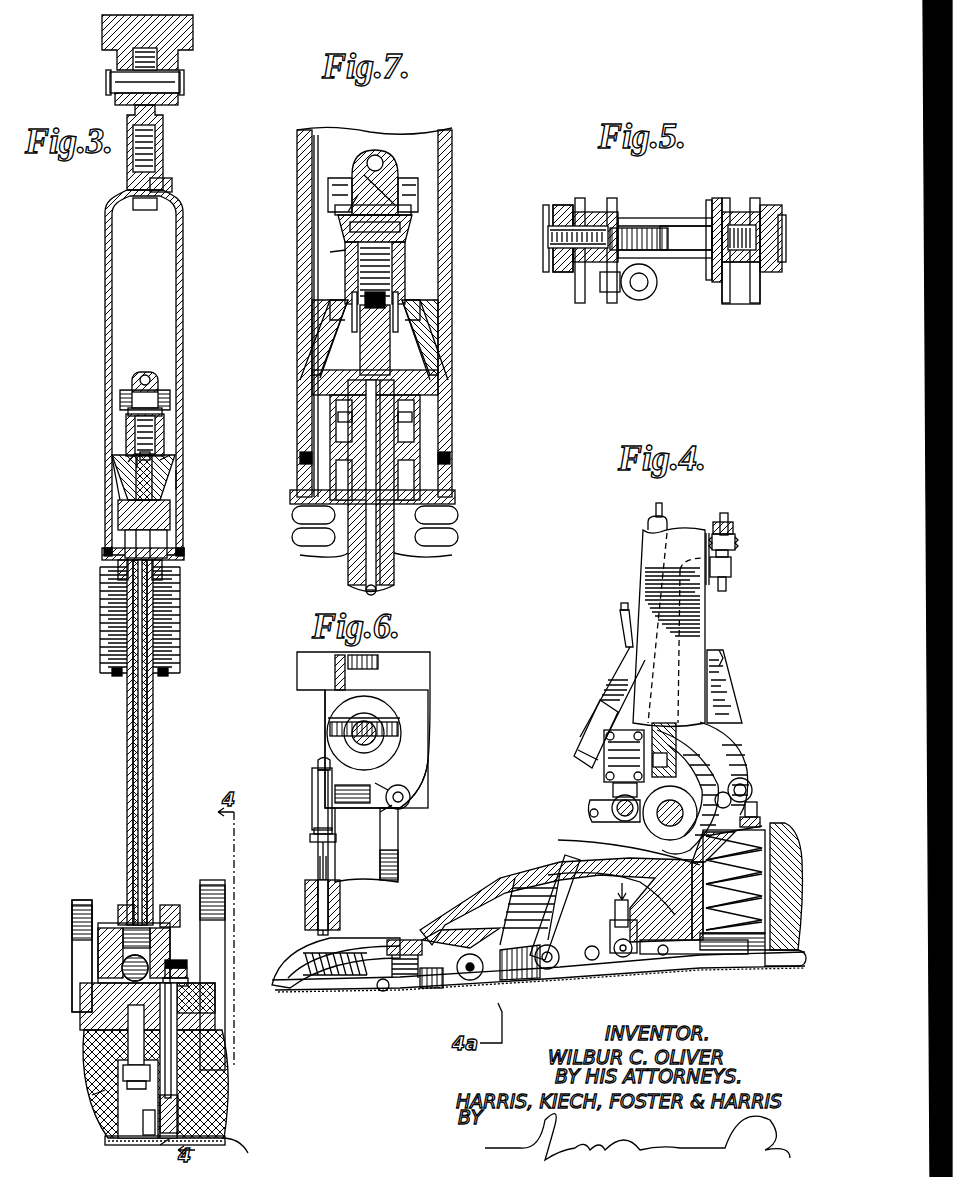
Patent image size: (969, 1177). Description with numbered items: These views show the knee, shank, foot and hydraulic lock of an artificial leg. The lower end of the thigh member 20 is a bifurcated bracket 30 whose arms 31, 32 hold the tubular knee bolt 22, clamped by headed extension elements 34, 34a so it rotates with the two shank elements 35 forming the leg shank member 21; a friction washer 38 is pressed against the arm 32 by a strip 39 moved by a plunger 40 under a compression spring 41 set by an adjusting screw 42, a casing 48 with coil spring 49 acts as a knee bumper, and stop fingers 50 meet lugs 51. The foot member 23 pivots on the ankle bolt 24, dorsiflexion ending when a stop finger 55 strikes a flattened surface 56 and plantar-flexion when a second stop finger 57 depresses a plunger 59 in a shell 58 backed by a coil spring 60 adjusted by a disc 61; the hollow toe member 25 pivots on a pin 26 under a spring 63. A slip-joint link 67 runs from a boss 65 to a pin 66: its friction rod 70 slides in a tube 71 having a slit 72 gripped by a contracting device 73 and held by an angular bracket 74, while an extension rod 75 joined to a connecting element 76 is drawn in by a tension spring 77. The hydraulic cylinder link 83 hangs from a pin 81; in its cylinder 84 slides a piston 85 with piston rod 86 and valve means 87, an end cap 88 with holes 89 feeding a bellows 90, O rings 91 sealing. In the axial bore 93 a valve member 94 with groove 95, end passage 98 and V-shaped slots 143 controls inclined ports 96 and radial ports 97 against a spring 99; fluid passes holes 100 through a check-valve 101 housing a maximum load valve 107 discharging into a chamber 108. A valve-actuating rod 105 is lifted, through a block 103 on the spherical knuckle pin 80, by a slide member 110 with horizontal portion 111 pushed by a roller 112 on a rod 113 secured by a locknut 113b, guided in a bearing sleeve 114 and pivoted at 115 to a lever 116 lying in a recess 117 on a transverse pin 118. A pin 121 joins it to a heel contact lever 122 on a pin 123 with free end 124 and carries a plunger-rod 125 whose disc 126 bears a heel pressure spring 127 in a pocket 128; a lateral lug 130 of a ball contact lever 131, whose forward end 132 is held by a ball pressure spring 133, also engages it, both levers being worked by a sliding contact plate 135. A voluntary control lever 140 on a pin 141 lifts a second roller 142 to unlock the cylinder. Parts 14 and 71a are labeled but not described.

In FIG. 4, the lever 14 is at (620, 614).
In FIG. 6, the thigh member 20 is at (430, 665).
In FIG. 3, the leg shank member 21 is at (72, 903).
In FIG. 6, the leg shank member 21 is at (398, 858).
In FIG. 5, the leg shank member 21 is at (560, 272).
In FIG. 4, the leg shank member 21 is at (643, 552).
In FIG. 6, the knee bolt 22 is at (340, 716).
In FIG. 5, the knee bolt 22 is at (690, 258).
In FIG. 3, the foot member 23 is at (84, 1060).
In FIG. 4, the foot member 23 is at (520, 882).
In FIG. 4, the ankle bolt 24 is at (672, 840).
In FIG. 4, the toe member 25 is at (318, 995).
In FIG. 4, the pin 26 is at (383, 991).
In FIG. 3, the bifurcated bracket 30 is at (193, 42).
In FIG. 6, the bifurcated bracket 30 is at (325, 700).
In FIG. 5, the bifurcated bracket 30 is at (760, 288).
In FIG. 5, the depending arm 31 is at (598, 212).
In FIG. 6, the depending arm 32 is at (412, 768).
In FIG. 5, the depending arm 32 is at (755, 198).
In FIG. 5, the extension element 34 is at (543, 228).
In FIG. 5, the extension element 34a is at (786, 238).
In FIG. 3, the shank element 35 is at (82, 900).
In FIG. 6, the shank element 35 is at (392, 880).
In FIG. 5, the shank element 35 is at (560, 205).
In FIG. 4, the shank element 35 is at (700, 640).
In FIG. 6, the friction washer 38 is at (378, 733).
In FIG. 5, the friction washer 38 is at (717, 198).
In FIG. 6, the strip 39 is at (380, 745).
In FIG. 5, the strip 39 is at (708, 200).
In FIG. 6, the plunger 40 is at (378, 722).
In FIG. 5, the plunger 40 is at (668, 222).
In FIG. 5, the compression spring 41 is at (640, 228).
In FIG. 5, the adjusting screw 42 is at (550, 240).
In FIG. 5, the casing 48 is at (634, 300).
In FIG. 5, the coil spring 49 is at (652, 294).
In FIG. 6, the stop finger 50 is at (410, 797).
In FIG. 6, the lug 51 is at (370, 800).
In FIG. 4, the stop finger 55 is at (590, 735).
In FIG. 4, the flattened surface 56 is at (560, 845).
In FIG. 4, the second stop finger 57 is at (750, 790).
In FIG. 4, the shell 58 is at (765, 838).
In FIG. 4, the plunger 59 is at (760, 818).
In FIG. 4, the coil spring 60 is at (775, 950).
In FIG. 4, the disc 61 is at (752, 950).
In FIG. 4, the spring 63 is at (345, 976).
In FIG. 6, the boss 65 is at (318, 765).
In FIG. 4, the pin 66 is at (727, 794).
In FIG. 6, the slip-joint link 67 is at (316, 860).
In FIG. 4, the slip-joint link 67 is at (733, 528).
In FIG. 6, the upper friction rod 70 is at (318, 806).
In FIG. 6, the tube 71 is at (310, 838).
In FIG. 4, the tube 71 is at (735, 545).
In FIG. 6, the washer 71a is at (314, 831).
In FIG. 6, the slit 72 is at (320, 875).
In FIG. 6, the contracting device 73 is at (340, 897).
In FIG. 6, the angular bracket 74 is at (312, 786).
In FIG. 4, the extension rod 75 is at (726, 513).
In FIG. 4, the connecting element 76 is at (705, 610).
In FIG. 4, the tension spring 77 is at (731, 565).
In FIG. 3, the spherical knuckle pin 80 is at (80, 1000).
In FIG. 3, the pin 81 is at (180, 82).
In FIG. 3, the hydraulic cylinder link 83 is at (153, 748).
In FIG. 7, the hydraulic cylinder link 83 is at (396, 572).
In FIG. 4, the hydraulic cylinder link 83 is at (650, 520).
In FIG. 3, the cylinder 84 is at (105, 305).
In FIG. 7, the cylinder 84 is at (452, 150).
In FIG. 3, the piston 85 is at (165, 470).
In FIG. 7, the piston 85 is at (318, 340).
In FIG. 3, the piston rod 86 is at (127, 718).
In FIG. 7, the piston rod 86 is at (348, 572).
In FIG. 4, the piston rod 86 is at (645, 590).
In FIG. 3, the internal valve means 87 is at (160, 376).
In FIG. 7, the internal valve means 87 is at (350, 200).
In FIG. 3, the end cap 88 is at (184, 556).
In FIG. 7, the end cap 88 is at (455, 497).
In FIG. 3, the holes 89 is at (112, 562).
In FIG. 7, the holes 89 is at (292, 515).
In FIG. 3, the bellows element 90 is at (180, 615).
In FIG. 7, the bellows element 90 is at (452, 550).
In FIG. 3, the O rings 91 is at (176, 462).
In FIG. 7, the O rings 91 is at (412, 418).
In FIG. 3, the axial bore 93 is at (120, 490).
In FIG. 7, the axial bore 93 is at (405, 250).
In FIG. 3, the valve member 94 is at (116, 470).
In FIG. 7, the valve member 94 is at (390, 340).
In FIG. 3, the peripheral groove 95 is at (174, 480).
In FIG. 7, the peripheral groove 95 is at (438, 318).
In FIG. 3, the inclined ports 96 is at (118, 512).
In FIG. 7, the inclined ports 96 is at (320, 360).
In FIG. 3, the radial ports 97 is at (137, 462).
In FIG. 7, the radial ports 97 is at (354, 300).
In FIG. 3, the end passage 98 is at (140, 458).
In FIG. 7, the end passage 98 is at (365, 298).
In FIG. 3, the spring 99 is at (132, 456).
In FIG. 7, the spring 99 is at (330, 252).
In FIG. 3, the holes 100 is at (170, 402).
In FIG. 7, the holes 100 is at (328, 195).
In FIG. 3, the check-valve 101 is at (164, 386).
In FIG. 7, the check-valve 101 is at (345, 225).
In FIG. 3, the block 103 is at (100, 930).
In FIG. 4, the block 103 is at (604, 770).
In FIG. 3, the valve-actuating rod 105 is at (140, 795).
In FIG. 7, the valve-actuating rod 105 is at (366, 440).
In FIG. 4, the valve-actuating rod 105 is at (662, 506).
In FIG. 3, the maximum load valve 107 is at (138, 374).
In FIG. 7, the maximum load valve 107 is at (375, 155).
In FIG. 3, the chamber 108 is at (130, 412).
In FIG. 7, the chamber 108 is at (400, 228).
In FIG. 3, the slide member 110 is at (149, 965).
In FIG. 4, the slide member 110 is at (613, 790).
In FIG. 3, the horizontal portion 111 is at (180, 915).
In FIG. 3, the roller 112 is at (187, 966).
In FIG. 3, the rod 113 is at (213, 1040).
In FIG. 3, the locknut 113b is at (215, 1010).
In FIG. 3, the vertical bearing sleeve 114 is at (180, 1080).
In FIG. 3, the pivotal connection 115 is at (178, 1110).
In FIG. 4, the pivotal connection 115 is at (623, 957).
In FIG. 3, the lever 116 is at (150, 1135).
In FIG. 4, the lever 116 is at (592, 960).
In FIG. 3, the recess 117 is at (92, 1095).
In FIG. 4, the recess 117 is at (445, 928).
In FIG. 4, the transverse pin 118 is at (472, 980).
In FIG. 4, the pin 121 is at (549, 969).
In FIG. 3, the heel contact lever 122 is at (108, 1138).
In FIG. 4, the heel contact lever 122 is at (655, 954).
In FIG. 4, the transverse pin 123 is at (680, 955).
In FIG. 4, the rearward free end 124 is at (790, 966).
In FIG. 4, the plunger-rod 125 is at (615, 910).
In FIG. 4, the disc 126 is at (520, 885).
In FIG. 4, the heel pressure compression spring 127 is at (580, 888).
In FIG. 4, the pocket 128 is at (575, 848).
In FIG. 4, the lateral lug 130 is at (505, 978).
In FIG. 4, the ball contact lever 131 is at (432, 988).
In FIG. 4, the forward free end 132 is at (405, 980).
In FIG. 4, the ball pressure spring 133 is at (405, 940).
In FIG. 3, the contact plate 135 is at (243, 1153).
In FIG. 4, the contact plate 135 is at (715, 968).
In FIG. 3, the voluntary control lever 140 is at (188, 983).
In FIG. 4, the voluntary control lever 140 is at (625, 821).
In FIG. 4, the pin 141 is at (590, 813).
In FIG. 3, the second roller 142 is at (187, 975).
In FIG. 4, the second roller 142 is at (592, 806).
In FIG. 7, the V-shaped slots 143 is at (330, 310).